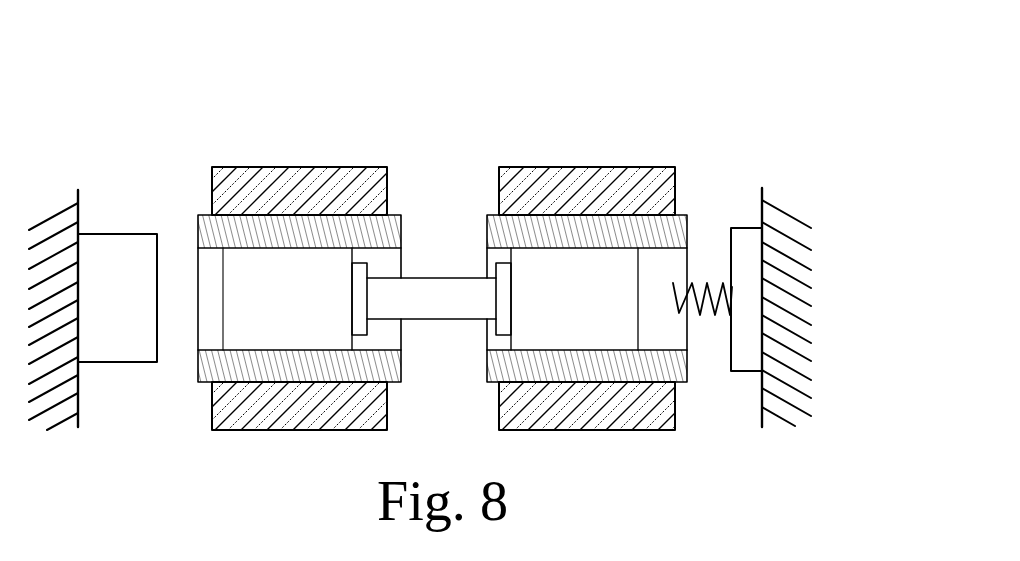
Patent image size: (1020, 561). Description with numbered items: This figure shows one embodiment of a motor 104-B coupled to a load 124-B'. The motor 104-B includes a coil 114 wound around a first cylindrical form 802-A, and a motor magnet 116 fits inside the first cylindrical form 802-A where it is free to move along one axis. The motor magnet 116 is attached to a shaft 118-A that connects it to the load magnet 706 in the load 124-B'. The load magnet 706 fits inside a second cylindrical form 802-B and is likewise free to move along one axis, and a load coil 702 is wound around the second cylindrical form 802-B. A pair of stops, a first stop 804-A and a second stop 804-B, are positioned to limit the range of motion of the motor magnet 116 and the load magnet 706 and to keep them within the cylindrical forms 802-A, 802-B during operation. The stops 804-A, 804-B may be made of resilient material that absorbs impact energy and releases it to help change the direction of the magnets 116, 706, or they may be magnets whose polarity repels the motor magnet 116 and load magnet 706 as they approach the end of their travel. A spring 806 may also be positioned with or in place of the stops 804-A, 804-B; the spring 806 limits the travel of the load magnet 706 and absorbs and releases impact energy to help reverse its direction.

The motor 104-B is at (198, 64).
The load 124-B' is at (609, 215).
The coil 114 is at (300, 165).
The load coil 702 is at (562, 165).
The first cylindrical form 802-A is at (200, 213).
The second cylindrical form 802-B is at (680, 212).
The motor magnet 116 is at (296, 336).
The load magnet 706 is at (579, 336).
The shaft 118-A is at (417, 320).
The spring 806 is at (700, 313).
The first stop 804-A is at (120, 363).
The second stop 804-B is at (755, 373).